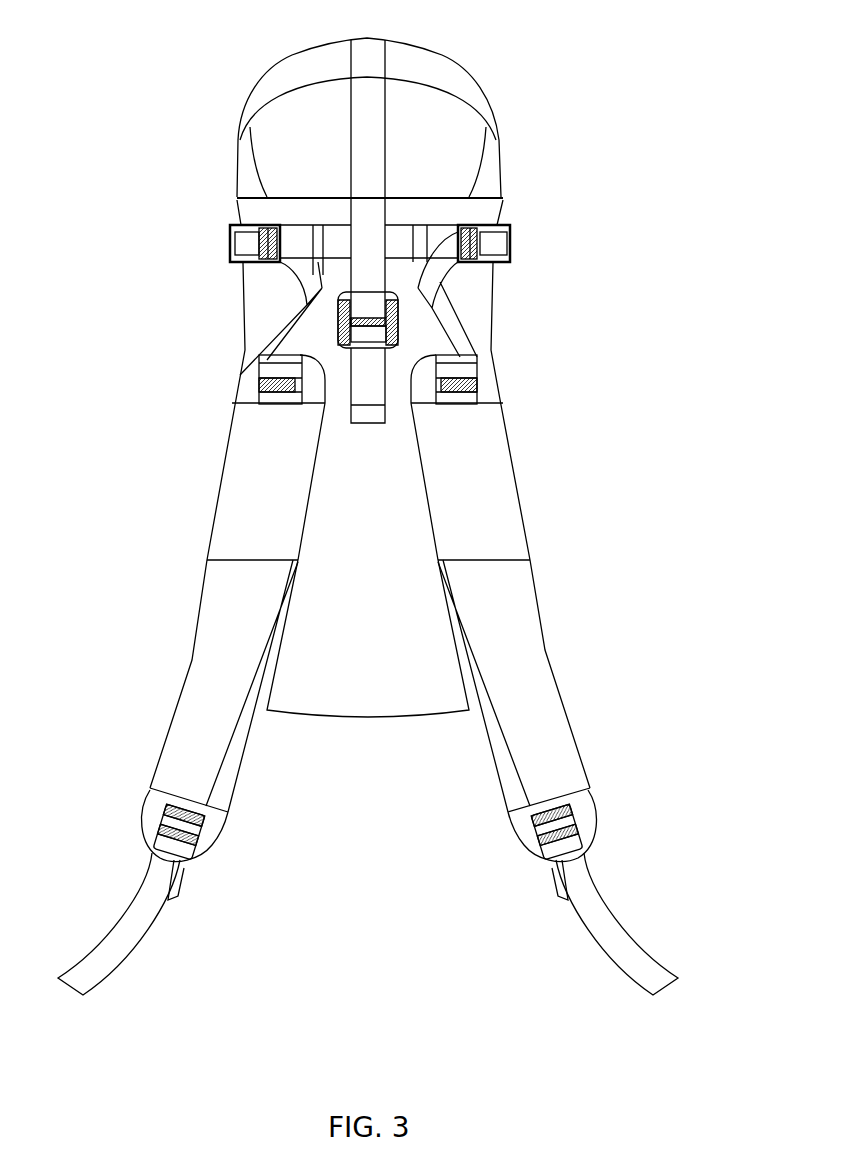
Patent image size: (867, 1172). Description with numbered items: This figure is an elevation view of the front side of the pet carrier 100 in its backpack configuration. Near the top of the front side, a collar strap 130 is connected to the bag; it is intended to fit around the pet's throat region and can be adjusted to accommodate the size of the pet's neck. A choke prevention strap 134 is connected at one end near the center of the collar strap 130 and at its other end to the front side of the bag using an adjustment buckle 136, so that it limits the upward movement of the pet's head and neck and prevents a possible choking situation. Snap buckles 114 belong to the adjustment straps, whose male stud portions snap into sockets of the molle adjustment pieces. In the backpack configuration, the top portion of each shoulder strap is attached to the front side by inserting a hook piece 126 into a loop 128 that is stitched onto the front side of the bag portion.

The baby carrier 100 is at (357, 507).
The collar strap 130 is at (463, 63).
The choke prevention strap 134 is at (387, 157).
The snap buckle 114 is at (228, 249).
The adjustment buckle 136 is at (340, 323).
The hook piece 126 is at (245, 374).
The loop 128 is at (470, 358).